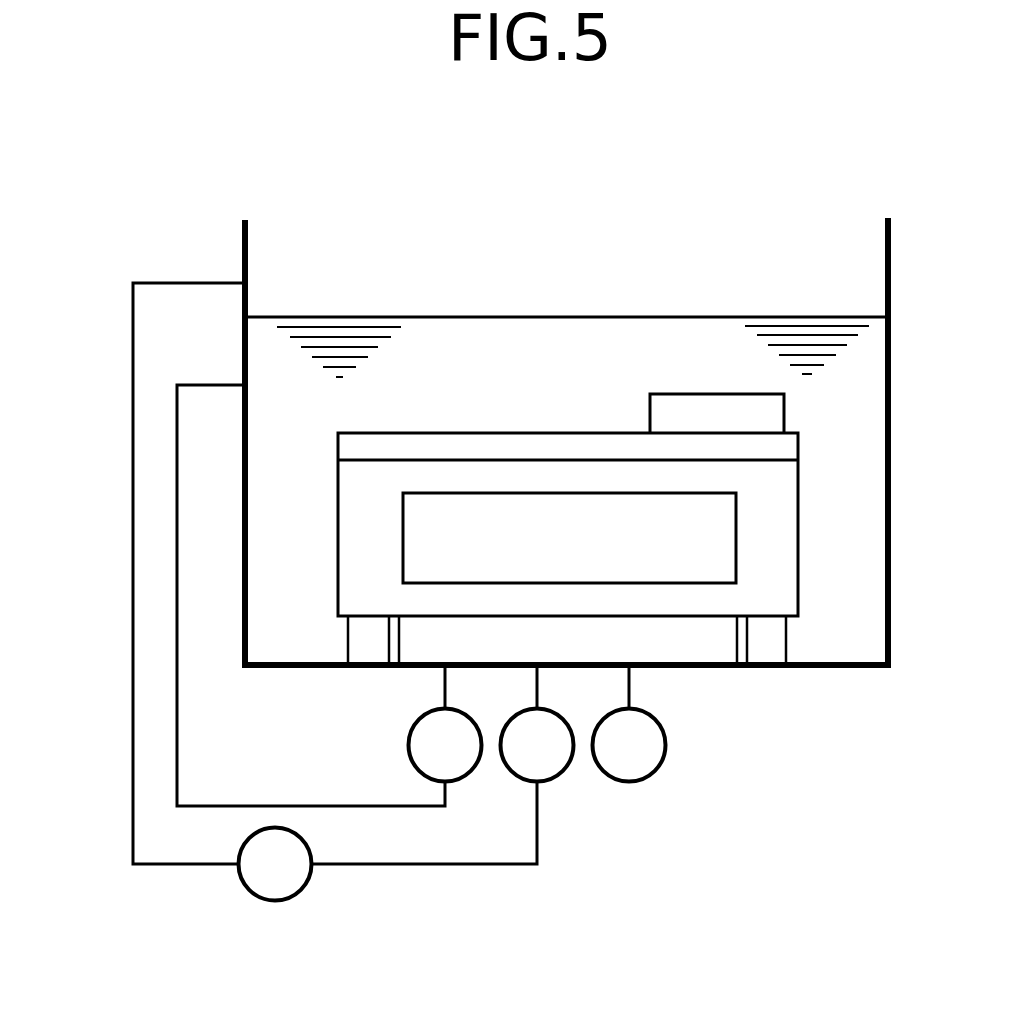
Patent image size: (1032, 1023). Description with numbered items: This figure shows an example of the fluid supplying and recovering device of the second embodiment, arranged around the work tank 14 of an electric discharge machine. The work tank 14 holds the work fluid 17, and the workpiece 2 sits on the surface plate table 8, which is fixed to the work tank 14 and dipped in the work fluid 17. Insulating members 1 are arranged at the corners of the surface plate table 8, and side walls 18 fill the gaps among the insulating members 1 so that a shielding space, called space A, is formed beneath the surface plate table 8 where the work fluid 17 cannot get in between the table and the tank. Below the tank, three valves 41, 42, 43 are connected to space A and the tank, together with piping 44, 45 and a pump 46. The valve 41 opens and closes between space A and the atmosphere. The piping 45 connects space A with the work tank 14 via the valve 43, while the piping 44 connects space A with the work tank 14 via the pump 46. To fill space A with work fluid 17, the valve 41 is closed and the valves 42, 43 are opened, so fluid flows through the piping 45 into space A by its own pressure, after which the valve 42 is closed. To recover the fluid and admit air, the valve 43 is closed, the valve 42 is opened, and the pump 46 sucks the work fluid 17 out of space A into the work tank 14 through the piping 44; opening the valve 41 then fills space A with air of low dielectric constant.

The insulating member 1 is at (364, 655).
The workpiece 2 is at (684, 405).
The surface plate table 8 is at (780, 517).
The work tank 14 is at (245, 254).
The work fluid 17 is at (467, 328).
The side wall 18 is at (697, 652).
The valve 41 is at (650, 780).
The valve 42 is at (561, 778).
The valve 43 is at (470, 775).
The piping 44 is at (133, 451).
The piping 45 is at (177, 755).
The pump 46 is at (296, 900).